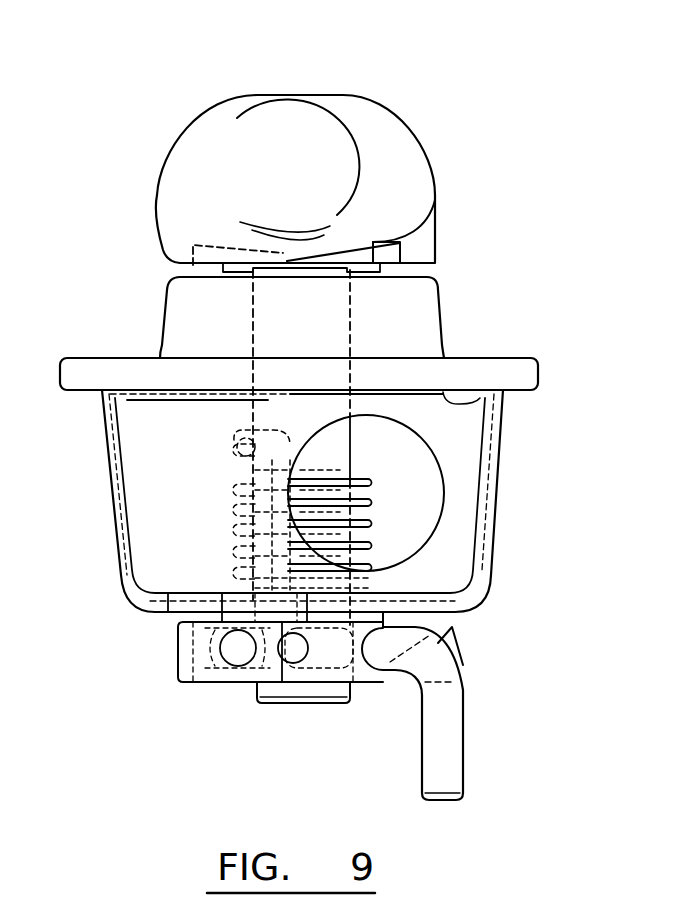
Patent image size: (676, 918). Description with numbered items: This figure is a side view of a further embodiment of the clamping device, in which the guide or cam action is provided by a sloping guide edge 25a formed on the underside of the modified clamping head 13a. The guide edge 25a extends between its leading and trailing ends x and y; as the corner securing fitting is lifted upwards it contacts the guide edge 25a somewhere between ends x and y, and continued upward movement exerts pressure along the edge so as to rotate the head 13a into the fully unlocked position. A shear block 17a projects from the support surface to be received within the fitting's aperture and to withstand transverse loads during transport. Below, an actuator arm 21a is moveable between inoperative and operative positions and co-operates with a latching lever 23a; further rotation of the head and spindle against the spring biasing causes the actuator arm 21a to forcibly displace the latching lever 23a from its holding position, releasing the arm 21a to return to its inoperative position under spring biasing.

The clamping head 13a is at (238, 100).
The guide edge 25a is at (340, 247).
The shear block 17a is at (417, 310).
The latching lever 23a is at (387, 677).
The actuator arm 21a is at (453, 740).
The leading end of guide edge x is at (290, 262).
The trailing end of guide edge y is at (367, 242).